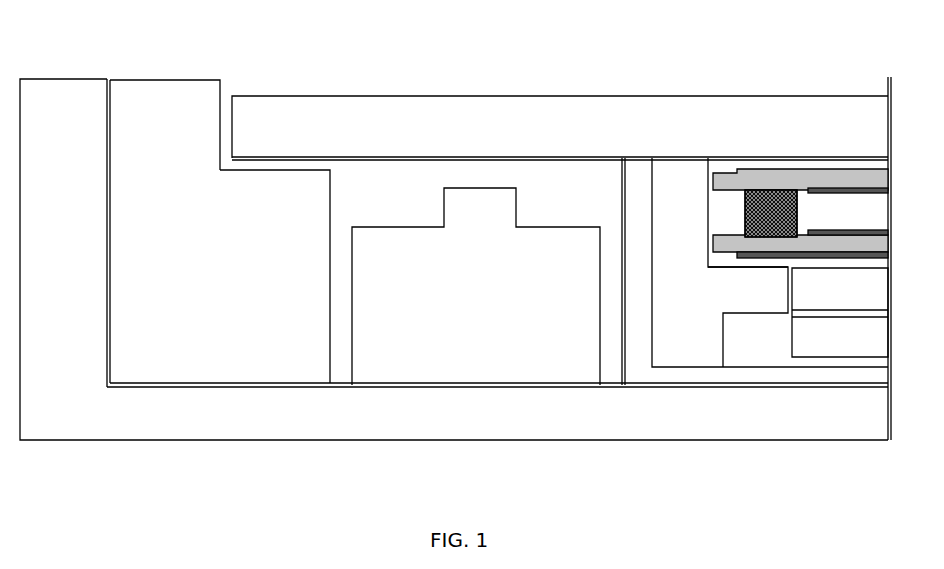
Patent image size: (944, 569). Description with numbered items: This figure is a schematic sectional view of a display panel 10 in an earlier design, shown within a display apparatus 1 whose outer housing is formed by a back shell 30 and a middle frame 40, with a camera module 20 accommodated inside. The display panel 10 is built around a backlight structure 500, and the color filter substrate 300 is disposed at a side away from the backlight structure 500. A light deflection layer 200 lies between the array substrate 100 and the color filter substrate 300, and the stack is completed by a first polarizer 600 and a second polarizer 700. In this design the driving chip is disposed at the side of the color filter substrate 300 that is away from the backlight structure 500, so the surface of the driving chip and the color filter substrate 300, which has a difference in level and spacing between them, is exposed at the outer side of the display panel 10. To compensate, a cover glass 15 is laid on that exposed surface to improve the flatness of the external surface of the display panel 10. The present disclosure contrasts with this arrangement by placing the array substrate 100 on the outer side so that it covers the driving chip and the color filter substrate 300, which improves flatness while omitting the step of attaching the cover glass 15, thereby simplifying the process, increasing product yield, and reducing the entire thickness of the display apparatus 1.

The display apparatus 1 is at (137, 65).
The display panel 10 is at (861, 155).
The cover glass 15 is at (528, 138).
The camera module 20 is at (515, 347).
The back shell 30 is at (233, 395).
The middle frame 40 is at (258, 342).
The array substrate 100 is at (793, 247).
The light deflection layer 200 is at (848, 217).
The color filter substrate 300 is at (727, 173).
The backlight structure 500 is at (810, 293).
The first polarizer 600 is at (838, 253).
The second polarizer 700 is at (877, 170).